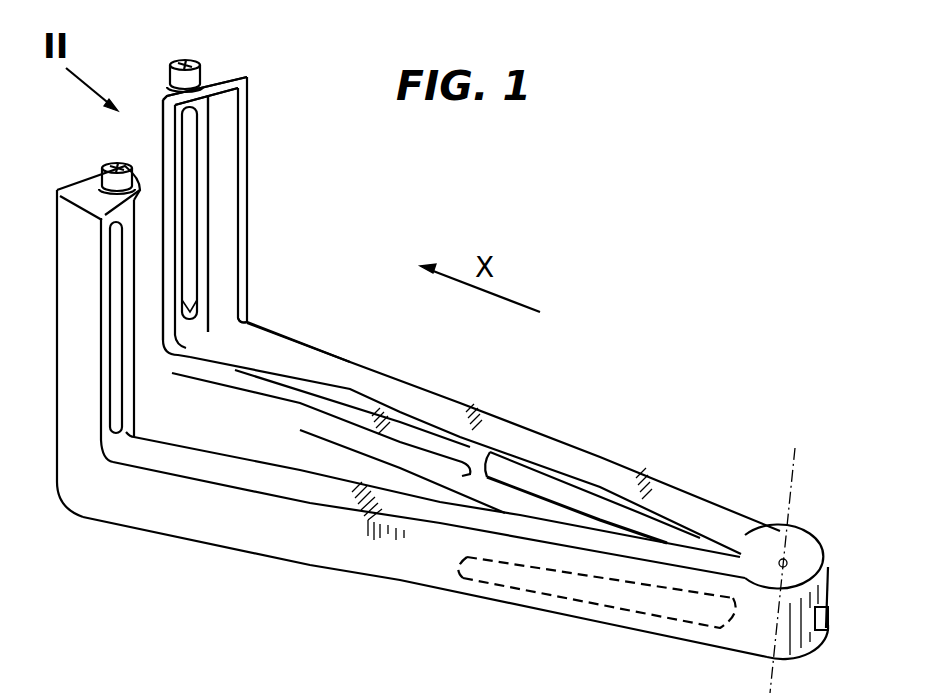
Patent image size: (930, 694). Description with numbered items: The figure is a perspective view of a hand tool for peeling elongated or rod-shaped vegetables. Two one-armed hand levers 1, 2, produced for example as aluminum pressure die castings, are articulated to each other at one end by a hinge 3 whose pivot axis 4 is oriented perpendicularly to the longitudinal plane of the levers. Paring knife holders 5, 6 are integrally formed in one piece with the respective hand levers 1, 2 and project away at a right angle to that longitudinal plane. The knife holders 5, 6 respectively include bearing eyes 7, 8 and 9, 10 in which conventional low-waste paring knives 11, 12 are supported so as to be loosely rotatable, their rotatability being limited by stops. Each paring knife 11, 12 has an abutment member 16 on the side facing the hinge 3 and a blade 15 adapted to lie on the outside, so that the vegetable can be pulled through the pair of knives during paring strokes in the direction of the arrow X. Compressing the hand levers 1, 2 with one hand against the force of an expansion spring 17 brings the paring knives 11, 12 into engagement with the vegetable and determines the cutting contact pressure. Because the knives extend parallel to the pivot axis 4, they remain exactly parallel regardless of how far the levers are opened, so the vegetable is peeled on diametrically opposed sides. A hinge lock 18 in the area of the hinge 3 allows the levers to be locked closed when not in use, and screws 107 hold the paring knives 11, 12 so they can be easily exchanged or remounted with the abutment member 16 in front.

The hand lever 1 is at (444, 407).
The hand lever 2 is at (336, 550).
The hinge 3 is at (813, 526).
The pivot axis 4 is at (792, 472).
The paring knife holder 5 is at (65, 348).
The paring knife holder 6 is at (224, 170).
The bearing eye 7 is at (77, 183).
The bearing eye 8 is at (140, 432).
The bearing eye 9 is at (213, 77).
The bearing eye 10 is at (248, 328).
The paring knife 11 is at (118, 257).
The paring knife 12 is at (210, 133).
The blade 15 is at (163, 137).
The abutment member 16 is at (212, 233).
The expansion spring 17 is at (560, 567).
The hinge lock 18 is at (815, 631).
The screw 107 is at (186, 60).